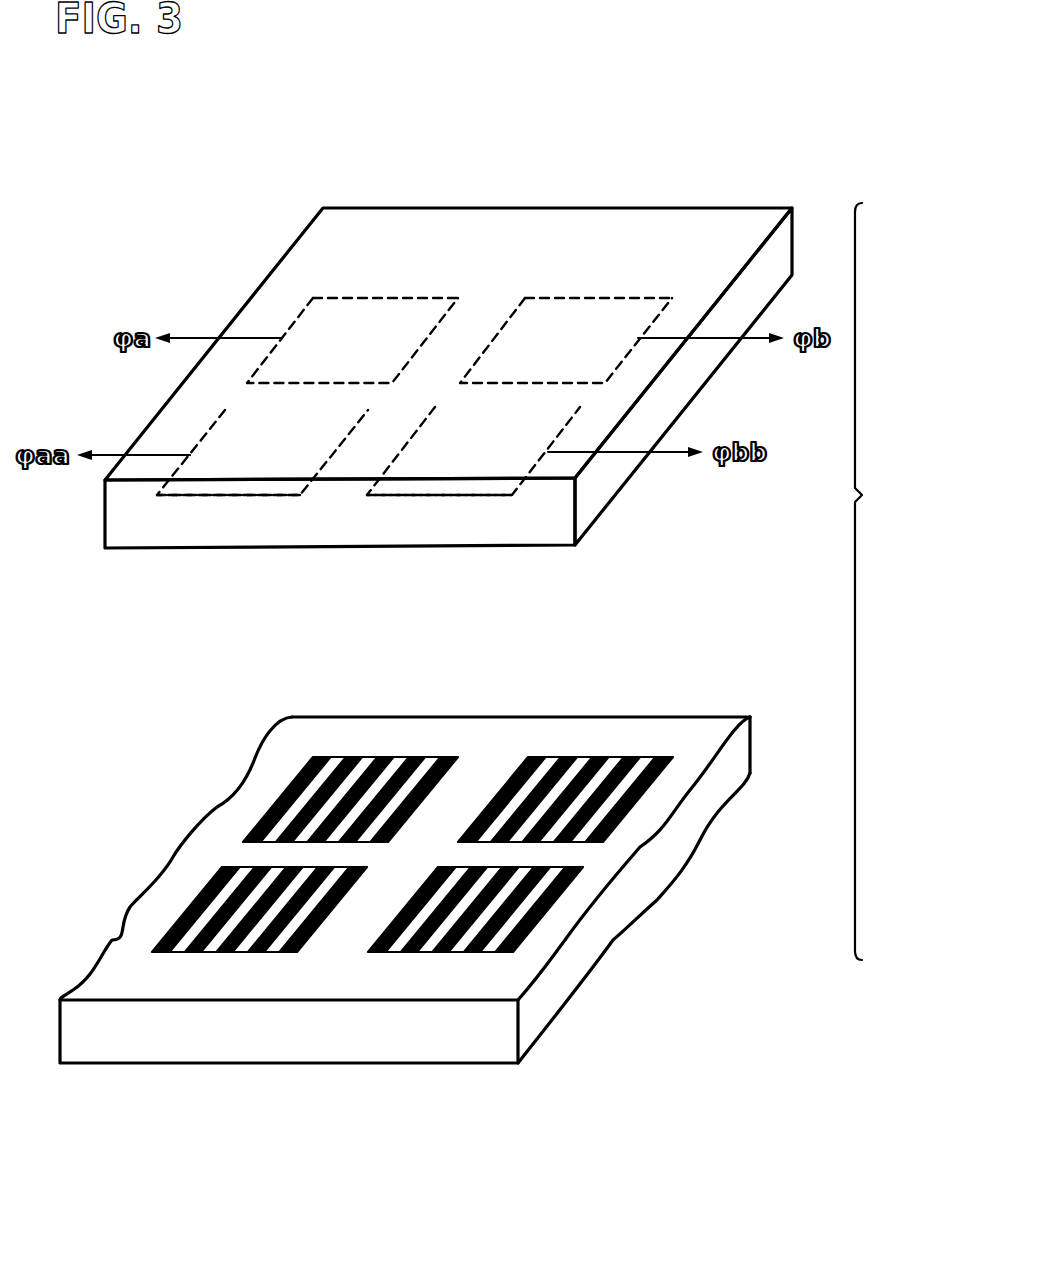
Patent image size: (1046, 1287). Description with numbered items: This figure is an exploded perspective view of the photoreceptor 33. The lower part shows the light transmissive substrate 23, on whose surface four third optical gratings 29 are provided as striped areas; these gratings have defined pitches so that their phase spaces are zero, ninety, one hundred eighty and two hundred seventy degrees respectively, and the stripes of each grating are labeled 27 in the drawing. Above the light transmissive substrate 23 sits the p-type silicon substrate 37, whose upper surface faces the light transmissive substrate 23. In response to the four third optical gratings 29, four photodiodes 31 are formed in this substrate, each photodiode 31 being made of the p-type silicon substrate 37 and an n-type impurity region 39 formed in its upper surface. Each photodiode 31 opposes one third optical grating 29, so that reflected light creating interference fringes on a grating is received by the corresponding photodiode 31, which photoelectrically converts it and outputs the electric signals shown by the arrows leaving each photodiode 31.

The light transmissive substrate 23 is at (618, 902).
The electrode stripes 27 is at (392, 755).
The third optical grating 29 is at (327, 748).
The photodiode 31 is at (370, 290).
The photoreceptor 33 is at (875, 581).
The p-type silicon substrate 37 is at (712, 208).
The n-type impurity region 39 is at (420, 298).